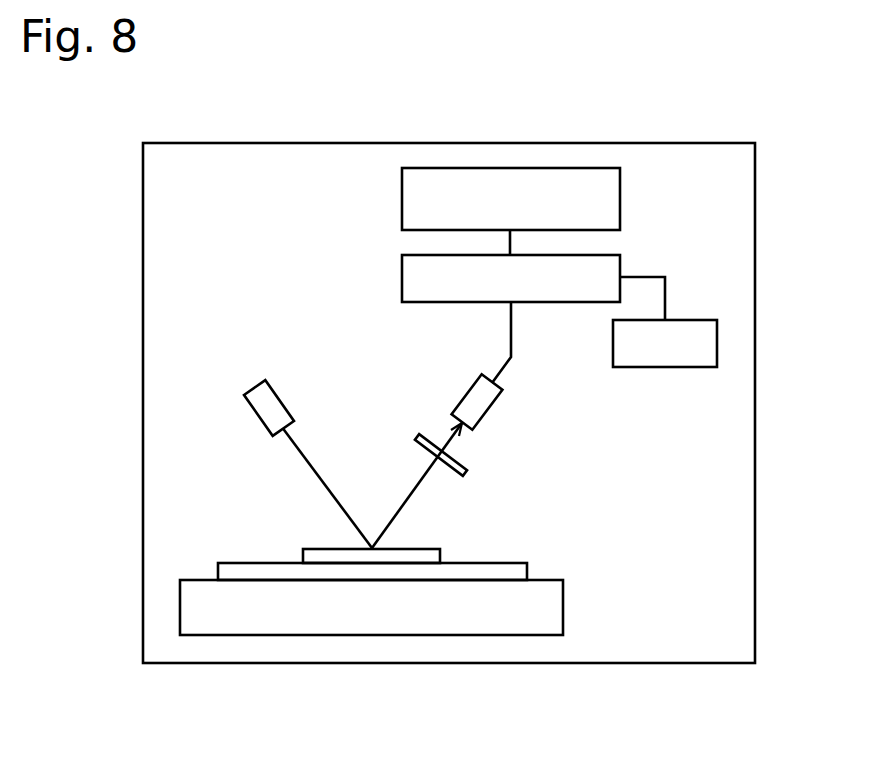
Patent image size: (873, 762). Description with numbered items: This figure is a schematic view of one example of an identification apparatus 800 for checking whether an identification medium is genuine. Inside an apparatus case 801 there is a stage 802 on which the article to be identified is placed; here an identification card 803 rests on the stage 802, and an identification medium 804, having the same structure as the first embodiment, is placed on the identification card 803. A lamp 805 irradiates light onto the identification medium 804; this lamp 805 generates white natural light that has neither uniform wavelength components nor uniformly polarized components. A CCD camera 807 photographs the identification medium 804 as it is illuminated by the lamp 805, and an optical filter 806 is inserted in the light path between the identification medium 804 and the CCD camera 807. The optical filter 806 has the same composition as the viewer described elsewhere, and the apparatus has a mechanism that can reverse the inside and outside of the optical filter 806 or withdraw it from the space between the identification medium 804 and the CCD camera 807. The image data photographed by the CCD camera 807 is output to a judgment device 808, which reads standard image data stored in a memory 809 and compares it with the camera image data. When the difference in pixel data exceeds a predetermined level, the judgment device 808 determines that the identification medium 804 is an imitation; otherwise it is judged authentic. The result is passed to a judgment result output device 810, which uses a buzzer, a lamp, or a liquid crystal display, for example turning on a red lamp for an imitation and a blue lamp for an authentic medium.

The identification apparatus 800 is at (758, 361).
The apparatus case 801 is at (756, 507).
The stage 802 is at (270, 617).
The identification card 803 is at (498, 572).
The identification medium 804 is at (425, 556).
The lamp 805 is at (270, 406).
The optical filter 806 is at (457, 466).
The CCD camera 807 is at (470, 405).
The judgment device 808 is at (402, 286).
The memory 809 is at (632, 358).
The judgment result output device 810 is at (402, 202).